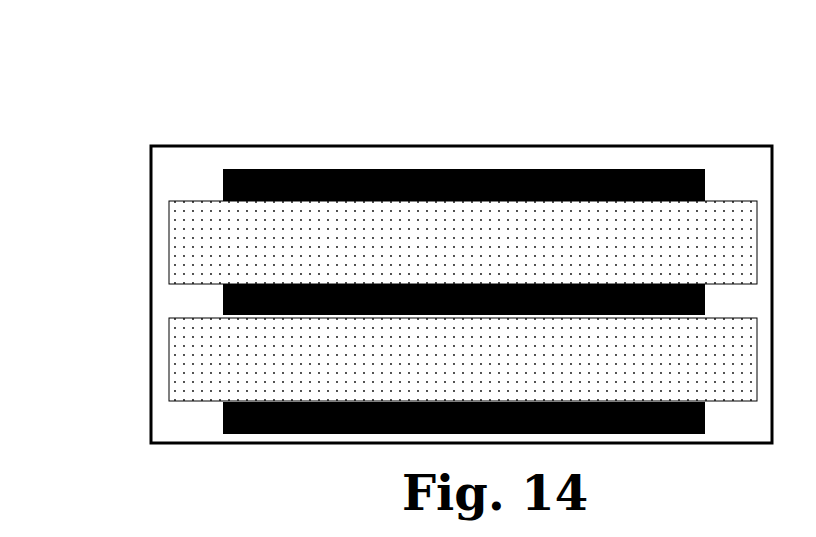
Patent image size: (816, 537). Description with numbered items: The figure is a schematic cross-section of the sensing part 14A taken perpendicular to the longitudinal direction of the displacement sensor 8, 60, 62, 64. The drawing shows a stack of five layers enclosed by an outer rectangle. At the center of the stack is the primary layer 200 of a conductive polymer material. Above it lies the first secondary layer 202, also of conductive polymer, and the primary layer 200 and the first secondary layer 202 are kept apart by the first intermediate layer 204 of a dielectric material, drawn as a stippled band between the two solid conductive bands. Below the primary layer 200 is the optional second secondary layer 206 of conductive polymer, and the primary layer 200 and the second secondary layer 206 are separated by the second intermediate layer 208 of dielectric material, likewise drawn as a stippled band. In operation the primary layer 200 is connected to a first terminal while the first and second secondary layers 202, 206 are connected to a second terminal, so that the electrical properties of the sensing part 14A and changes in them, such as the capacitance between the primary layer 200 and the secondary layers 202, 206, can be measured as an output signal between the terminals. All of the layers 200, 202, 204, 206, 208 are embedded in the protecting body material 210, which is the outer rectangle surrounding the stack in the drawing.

The sensing part 14A is at (167, 145).
The displacement sensor 8 is at (310, 146).
The displacement sensor 60 is at (410, 245).
The displacement sensor 62 is at (410, 245).
The displacement sensor 64 is at (410, 245).
The primary layer 200 is at (220, 303).
The first secondary layer 202 is at (460, 168).
The first intermediate layer 204 is at (185, 247).
The second secondary layer 206 is at (220, 417).
The second intermediate layer 208 is at (217, 369).
The protecting body material 210 is at (630, 148).